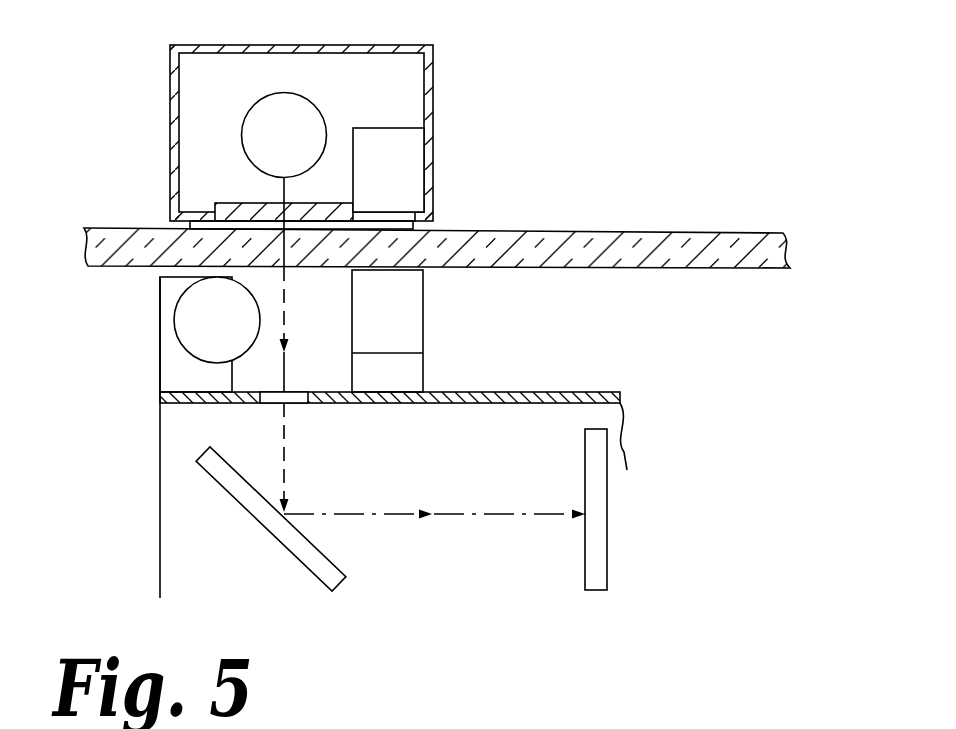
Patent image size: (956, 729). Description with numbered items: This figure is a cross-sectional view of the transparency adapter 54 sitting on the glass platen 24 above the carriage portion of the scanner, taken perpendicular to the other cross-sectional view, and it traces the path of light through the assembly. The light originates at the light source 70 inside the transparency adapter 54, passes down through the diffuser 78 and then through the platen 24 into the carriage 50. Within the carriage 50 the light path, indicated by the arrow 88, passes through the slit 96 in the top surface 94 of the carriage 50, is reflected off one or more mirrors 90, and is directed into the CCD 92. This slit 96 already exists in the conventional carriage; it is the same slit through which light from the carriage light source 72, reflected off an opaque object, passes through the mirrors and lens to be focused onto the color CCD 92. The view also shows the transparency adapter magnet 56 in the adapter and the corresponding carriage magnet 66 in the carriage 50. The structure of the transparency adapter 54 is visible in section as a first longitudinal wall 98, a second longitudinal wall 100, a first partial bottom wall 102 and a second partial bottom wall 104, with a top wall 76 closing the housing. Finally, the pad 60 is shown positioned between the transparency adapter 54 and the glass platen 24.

The platen 24 is at (640, 250).
The carriage 50 is at (136, 515).
The transparency adapter 54 is at (448, 64).
The transparency adapter magnet 56 is at (405, 168).
The pad 60 is at (353, 229).
The carriage magnet 66 is at (410, 313).
The light source 70 is at (284, 118).
The light source 72 is at (197, 310).
The top wall 76 is at (262, 45).
The diffuser 78 is at (268, 212).
The arrow 88 is at (313, 514).
The mirrors 90 is at (266, 530).
The CCD 92 is at (607, 580).
The top surface 94 is at (503, 392).
The slit 96 is at (270, 403).
The first longitudinal wall 98 is at (173, 86).
The second longitudinal wall 100 is at (434, 100).
The first partial bottom wall 102 is at (172, 220).
The second partial bottom wall 104 is at (425, 215).